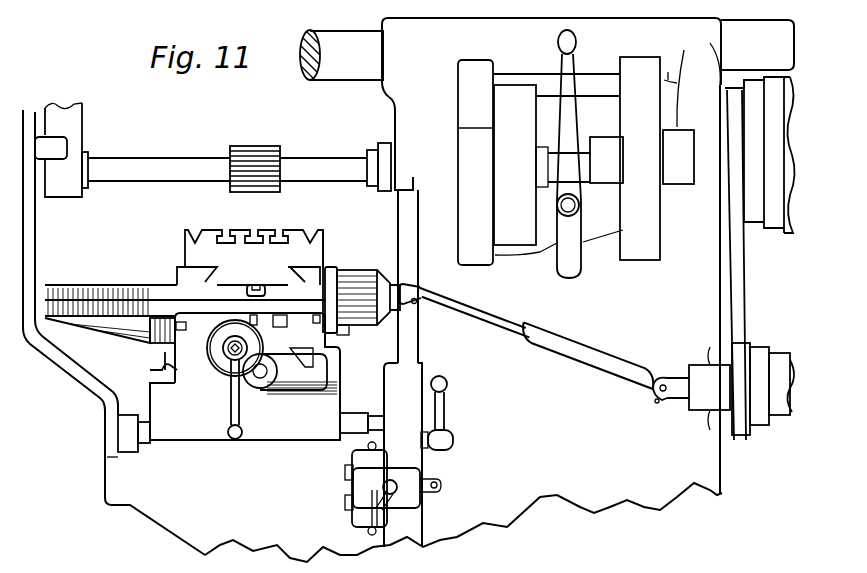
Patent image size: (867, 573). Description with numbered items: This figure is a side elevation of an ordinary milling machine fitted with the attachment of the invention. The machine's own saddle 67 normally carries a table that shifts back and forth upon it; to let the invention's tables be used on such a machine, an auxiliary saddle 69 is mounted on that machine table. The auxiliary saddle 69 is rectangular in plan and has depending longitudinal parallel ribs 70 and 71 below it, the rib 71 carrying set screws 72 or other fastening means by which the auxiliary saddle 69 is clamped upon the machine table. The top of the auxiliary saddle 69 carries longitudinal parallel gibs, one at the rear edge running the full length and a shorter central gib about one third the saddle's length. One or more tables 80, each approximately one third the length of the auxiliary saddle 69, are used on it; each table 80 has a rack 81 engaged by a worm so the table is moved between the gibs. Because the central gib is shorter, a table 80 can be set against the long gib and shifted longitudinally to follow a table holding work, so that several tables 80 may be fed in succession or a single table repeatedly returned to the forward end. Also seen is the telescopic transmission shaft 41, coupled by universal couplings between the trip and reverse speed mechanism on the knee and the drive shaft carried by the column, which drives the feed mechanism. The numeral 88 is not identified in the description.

The telescopic transmission shaft 41 is at (572, 372).
The saddle 67 is at (175, 430).
The auxiliary saddle 69 is at (150, 288).
The depending longitudinal rib 70 is at (333, 338).
The depending longitudinal rib 71 is at (152, 334).
The set screws 72 is at (124, 334).
The table 80 is at (325, 248).
The rack 81 is at (262, 283).
The rack 88 is at (309, 385).